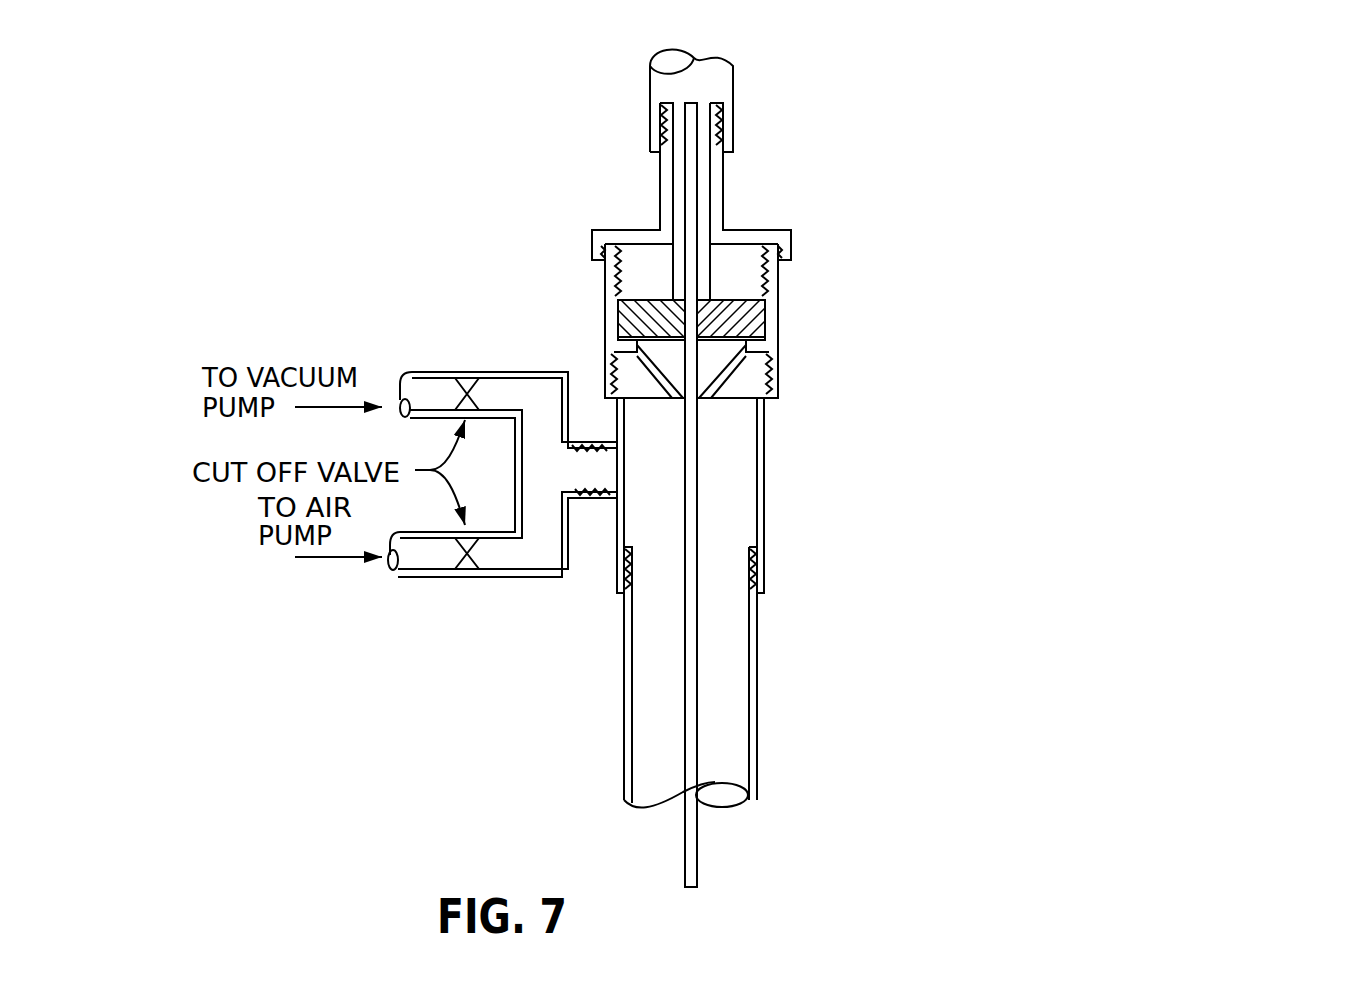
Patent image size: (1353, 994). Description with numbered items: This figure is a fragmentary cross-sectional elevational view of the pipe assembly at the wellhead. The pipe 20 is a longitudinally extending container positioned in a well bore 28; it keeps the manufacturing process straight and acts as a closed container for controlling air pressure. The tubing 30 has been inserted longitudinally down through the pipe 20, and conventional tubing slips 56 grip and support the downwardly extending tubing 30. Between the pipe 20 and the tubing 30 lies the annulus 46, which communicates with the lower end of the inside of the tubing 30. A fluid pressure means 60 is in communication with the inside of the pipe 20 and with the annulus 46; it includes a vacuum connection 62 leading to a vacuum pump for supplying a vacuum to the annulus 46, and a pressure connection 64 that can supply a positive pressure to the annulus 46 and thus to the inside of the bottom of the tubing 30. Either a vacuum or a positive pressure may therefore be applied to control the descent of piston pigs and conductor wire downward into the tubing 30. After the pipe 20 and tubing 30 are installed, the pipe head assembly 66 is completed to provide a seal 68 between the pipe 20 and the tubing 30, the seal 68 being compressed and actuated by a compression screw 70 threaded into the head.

The compression screw 70 is at (718, 272).
The seal 68 is at (727, 318).
The tubing slips 56 is at (703, 370).
The pipe head assembly 66 is at (778, 383).
The annulus 46 is at (660, 523).
The pipe 20 is at (757, 623).
The tubing 30 is at (698, 743).
The well bore 28 is at (720, 842).
The vacuum connection 62 is at (432, 376).
The pressure connection 64 is at (393, 572).
The fluid pressure means 60 is at (480, 578).